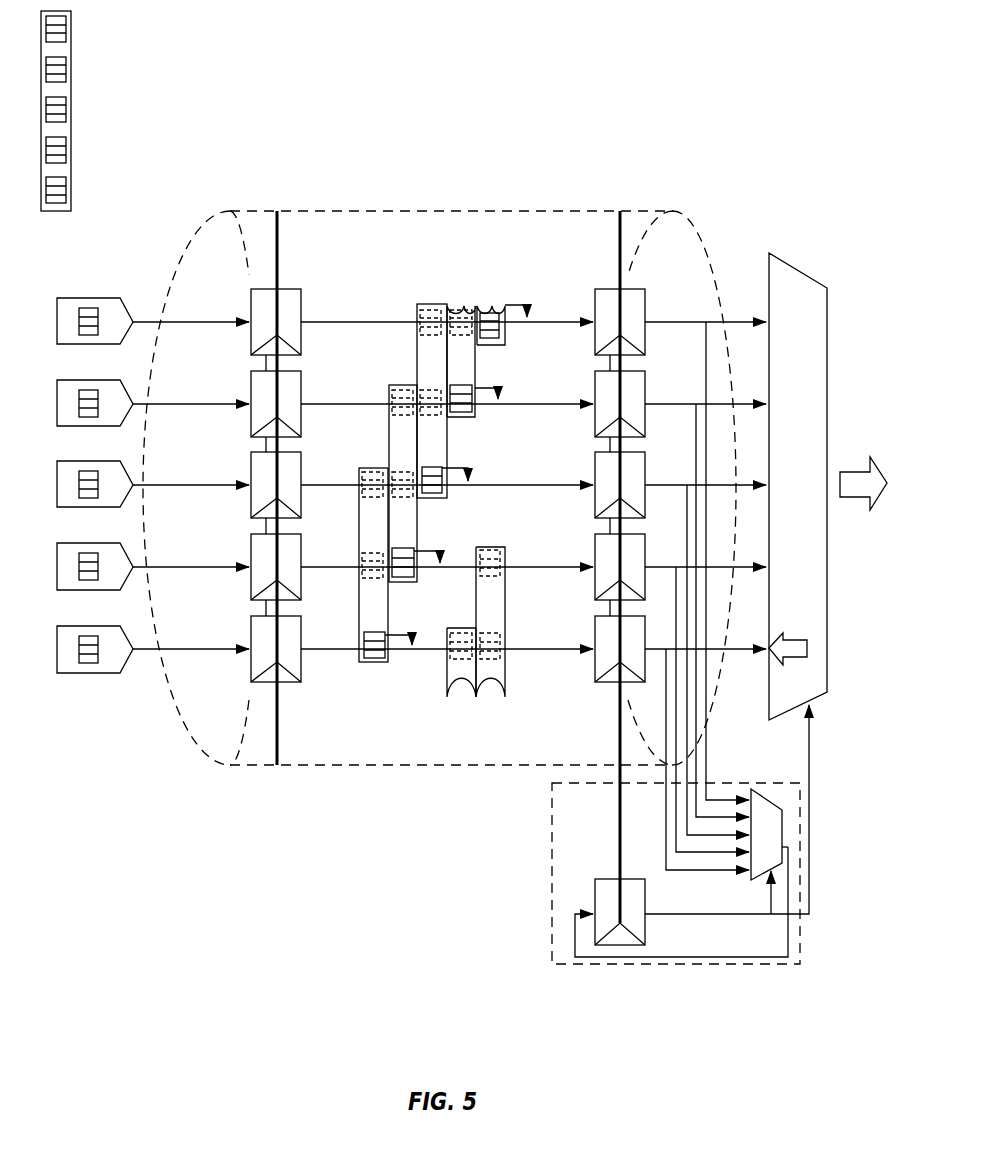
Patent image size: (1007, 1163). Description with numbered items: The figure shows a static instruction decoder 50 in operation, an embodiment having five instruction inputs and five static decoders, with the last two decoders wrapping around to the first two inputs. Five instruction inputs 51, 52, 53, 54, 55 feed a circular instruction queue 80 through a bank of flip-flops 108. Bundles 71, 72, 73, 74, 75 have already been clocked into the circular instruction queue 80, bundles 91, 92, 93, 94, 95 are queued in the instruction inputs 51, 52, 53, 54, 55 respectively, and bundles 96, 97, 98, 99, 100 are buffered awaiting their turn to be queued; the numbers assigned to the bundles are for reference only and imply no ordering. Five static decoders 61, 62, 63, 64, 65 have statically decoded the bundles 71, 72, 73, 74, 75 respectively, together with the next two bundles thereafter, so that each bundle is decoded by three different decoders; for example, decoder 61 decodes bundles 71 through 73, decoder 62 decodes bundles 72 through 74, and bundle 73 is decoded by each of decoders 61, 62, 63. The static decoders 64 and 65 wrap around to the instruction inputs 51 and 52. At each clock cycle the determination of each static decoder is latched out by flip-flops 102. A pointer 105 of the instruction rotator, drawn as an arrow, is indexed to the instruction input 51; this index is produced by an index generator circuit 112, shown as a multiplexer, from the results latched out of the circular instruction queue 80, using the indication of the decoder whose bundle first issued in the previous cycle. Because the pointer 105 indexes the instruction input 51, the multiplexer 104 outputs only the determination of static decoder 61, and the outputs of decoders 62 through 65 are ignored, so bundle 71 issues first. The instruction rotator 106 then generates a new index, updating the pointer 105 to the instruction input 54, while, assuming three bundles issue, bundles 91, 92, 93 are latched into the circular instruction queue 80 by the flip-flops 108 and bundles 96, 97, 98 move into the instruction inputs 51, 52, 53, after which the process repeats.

The static instruction decoder 50 is at (386, 88).
The instruction input 51 is at (92, 673).
The instruction input 52 is at (92, 590).
The instruction input 53 is at (90, 508).
The instruction input 54 is at (90, 427).
The instruction input 55 is at (90, 345).
The static decoder 61 is at (375, 663).
The static decoder 62 is at (415, 580).
The static decoder 63 is at (442, 498).
The static decoder 64 is at (467, 727).
The static decoder 65 is at (523, 713).
The bundle 71 is at (487, 630).
The bundle 72 is at (487, 550).
The bundle 73 is at (432, 468).
The bundle 74 is at (453, 383).
The bundle 75 is at (480, 312).
The circular instruction queue 80 is at (587, 210).
The bundle 91 is at (85, 633).
The bundle 92 is at (85, 550).
The bundle 93 is at (85, 468).
The bundle 94 is at (85, 387).
The bundle 95 is at (85, 305).
The bundle 96 is at (67, 183).
The bundle 97 is at (67, 143).
The bundle 98 is at (67, 103).
The bundle 99 is at (67, 63).
The bundle 100 is at (67, 23).
The flip-flop 102 is at (608, 879).
The multiplexer 104 is at (802, 270).
The pointer 105 is at (793, 637).
The instruction rotator 106 is at (550, 908).
The flip-flop 108 is at (251, 616).
The index generator circuit 112 is at (782, 823).